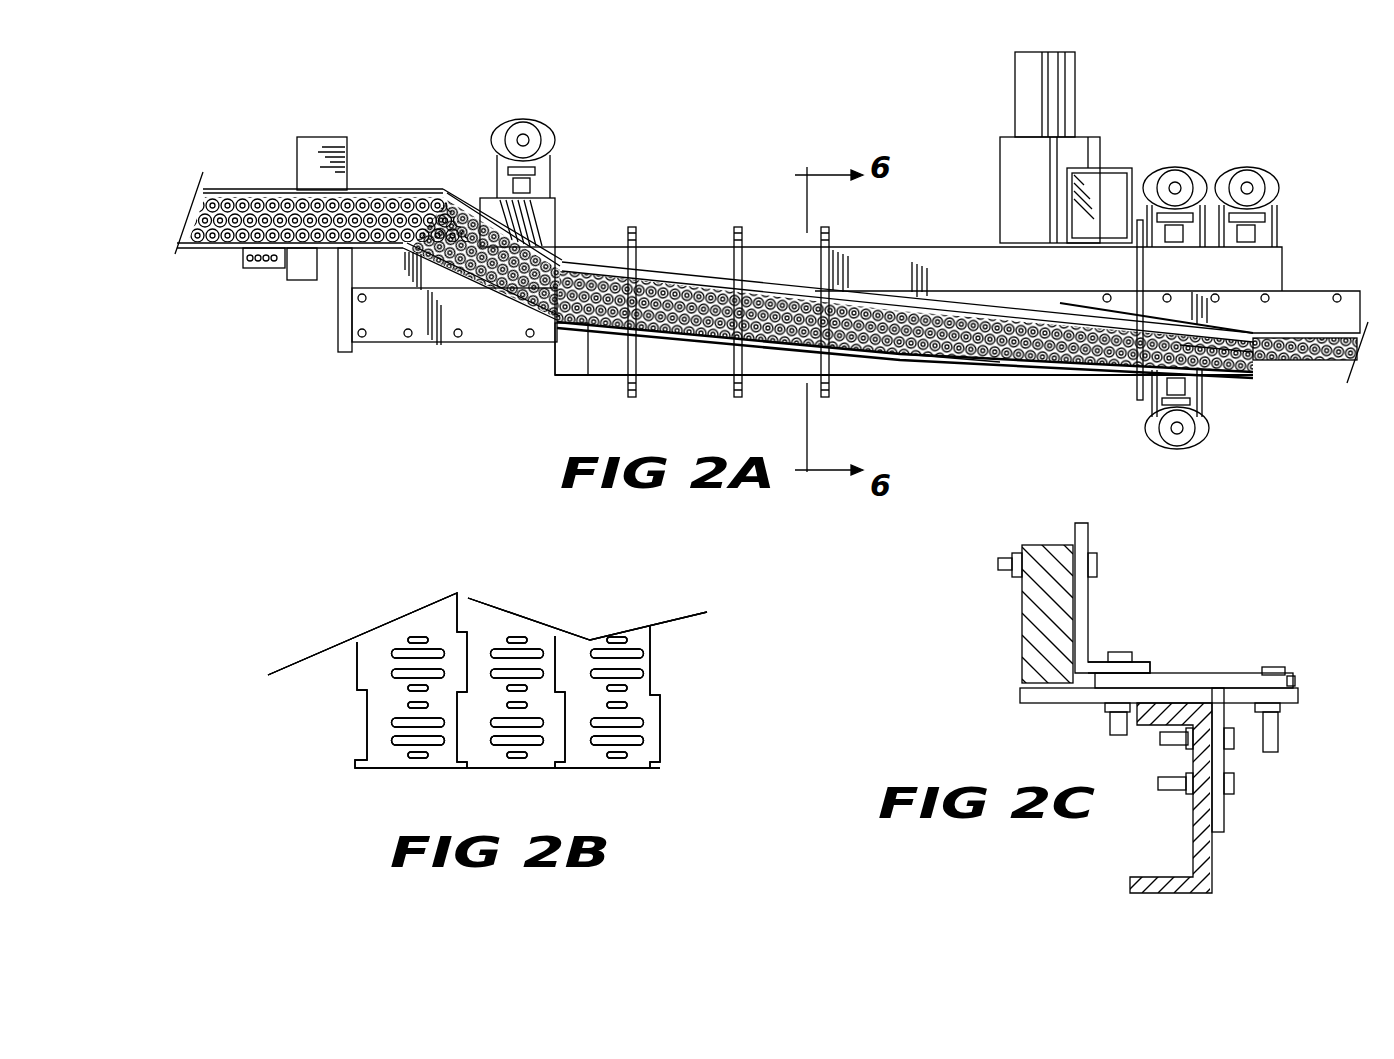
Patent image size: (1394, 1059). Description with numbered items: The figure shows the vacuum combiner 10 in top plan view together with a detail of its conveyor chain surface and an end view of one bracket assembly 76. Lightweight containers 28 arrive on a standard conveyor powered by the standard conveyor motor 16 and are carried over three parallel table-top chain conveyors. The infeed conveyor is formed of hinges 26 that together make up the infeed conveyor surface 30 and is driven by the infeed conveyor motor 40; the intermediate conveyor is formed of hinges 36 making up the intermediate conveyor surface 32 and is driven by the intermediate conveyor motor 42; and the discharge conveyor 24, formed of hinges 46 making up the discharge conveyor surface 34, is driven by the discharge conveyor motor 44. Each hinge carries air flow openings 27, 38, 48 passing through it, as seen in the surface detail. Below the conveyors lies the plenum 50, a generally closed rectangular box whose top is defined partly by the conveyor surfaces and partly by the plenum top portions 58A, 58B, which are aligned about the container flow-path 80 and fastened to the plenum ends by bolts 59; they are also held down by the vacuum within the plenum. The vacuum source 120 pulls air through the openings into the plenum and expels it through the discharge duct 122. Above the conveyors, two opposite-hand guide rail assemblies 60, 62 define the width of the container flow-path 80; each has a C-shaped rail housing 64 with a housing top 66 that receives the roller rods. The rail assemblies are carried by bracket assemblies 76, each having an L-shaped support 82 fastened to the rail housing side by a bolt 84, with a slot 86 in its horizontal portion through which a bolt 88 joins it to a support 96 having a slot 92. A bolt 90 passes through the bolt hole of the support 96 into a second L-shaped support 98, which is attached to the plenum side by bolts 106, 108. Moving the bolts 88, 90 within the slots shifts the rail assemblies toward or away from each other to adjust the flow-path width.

In FIG. 2A, the vacuum combiner 10 is at (778, 140).
In FIG. 2A, the standard conveyor motor 16 is at (523, 133).
In FIG. 2A, the discharge conveyor 24 is at (1355, 372).
In FIG. 2B, the hinges 26 is at (367, 678).
In FIG. 2B, the air flow openings 27 is at (627, 743).
In FIG. 2A, the lightweight containers 28 is at (403, 189).
In FIG. 2A, the infeed conveyor surface 30 is at (545, 246).
In FIG. 2A, the intermediate conveyor surface 32 is at (583, 327).
In FIG. 2A, the discharge conveyor surface 34 is at (1040, 348).
In FIG. 2A, the hinges 36 is at (930, 356).
In FIG. 2B, the hinges 36 is at (487, 680).
In FIG. 2B, the air flow openings 38 is at (517, 740).
In FIG. 2A, the infeed conveyor motor 40 is at (1177, 183).
In FIG. 2A, the intermediate conveyor motor 42 is at (1248, 183).
In FIG. 2A, the discharge conveyor motor 44 is at (1190, 437).
In FIG. 2A, the hinges 46 is at (1302, 364).
In FIG. 2B, the hinges 46 is at (487, 680).
In FIG. 2A, the air flow opening 48 is at (1140, 352).
In FIG. 2B, the air flow opening 48 is at (418, 740).
In FIG. 2C, the plenum 50 is at (1198, 800).
In FIG. 2A, the plenum top portion 58A is at (490, 323).
In FIG. 2A, the plenum top portion 58B is at (597, 253).
In FIG. 2A, the bolts 59 is at (1268, 296).
In FIG. 2A, the guide rail assembly 60 is at (693, 232).
In FIG. 2A, the guide rail assembly 62 is at (884, 382).
In FIG. 2C, the guide rail assembly 62 is at (1044, 548).
In FIG. 2A, the rail housing 64 is at (1068, 313).
In FIG. 2A, the housing top 66 is at (1183, 332).
In FIG. 2A, the bracket assembly 76 is at (633, 227).
In FIG. 2C, the bracket assembly 76 is at (1226, 582).
In FIG. 2A, the container flow-path 80 is at (880, 308).
In FIG. 2C, the L-shaped support 82 is at (1090, 612).
In FIG. 2C, the bolt 84 is at (1099, 565).
In FIG. 2C, the slot 86 is at (1152, 666).
In FIG. 2C, the bolt 88 is at (1120, 650).
In FIG. 2C, the bolt 90 is at (1274, 665).
In FIG. 2C, the slot 92 is at (1296, 680).
In FIG. 2C, the support 96 is at (1217, 672).
In FIG. 2C, the second L-shaped support 98 is at (1226, 820).
In FIG. 2C, the bolt 106 is at (1236, 738).
In FIG. 2C, the bolt 108 is at (1236, 783).
In FIG. 2A, the vacuum source 120 is at (1008, 158).
In FIG. 2A, the discharge duct 122 is at (1072, 78).